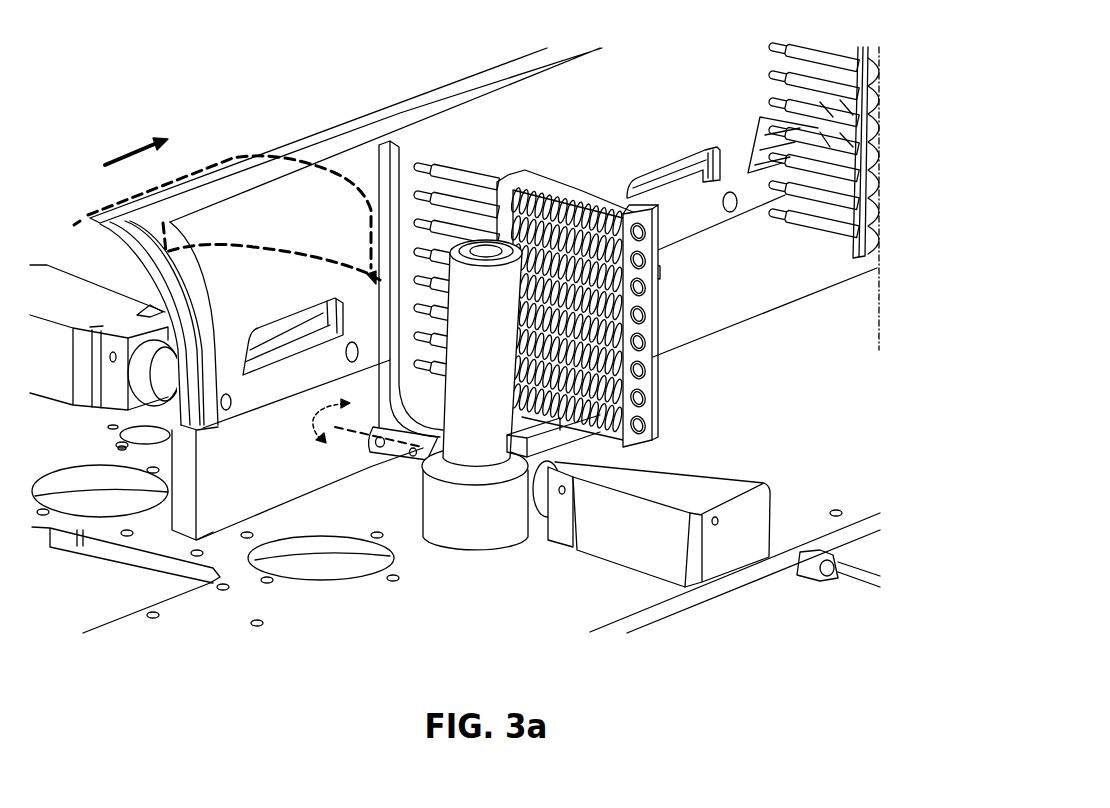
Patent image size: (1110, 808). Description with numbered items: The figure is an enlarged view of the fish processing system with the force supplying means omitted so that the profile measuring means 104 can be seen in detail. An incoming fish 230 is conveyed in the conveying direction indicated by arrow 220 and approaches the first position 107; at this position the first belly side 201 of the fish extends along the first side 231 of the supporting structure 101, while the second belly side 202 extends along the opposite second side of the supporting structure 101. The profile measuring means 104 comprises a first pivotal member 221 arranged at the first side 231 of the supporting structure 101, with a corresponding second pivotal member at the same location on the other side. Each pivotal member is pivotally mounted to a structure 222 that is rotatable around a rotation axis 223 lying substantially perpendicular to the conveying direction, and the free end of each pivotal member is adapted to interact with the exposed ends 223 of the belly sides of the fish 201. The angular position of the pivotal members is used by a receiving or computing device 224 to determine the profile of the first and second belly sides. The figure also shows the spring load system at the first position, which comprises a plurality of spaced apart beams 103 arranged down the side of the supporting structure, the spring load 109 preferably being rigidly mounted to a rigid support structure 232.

The supporting structure 101 is at (502, 118).
The spaced apart beams 103 is at (460, 173).
The profile measuring means 104 is at (353, 140).
The first position 107 is at (345, 472).
The spring load 109 is at (577, 217).
The first belly side 201 is at (200, 262).
The second belly side 202 is at (66, 219).
The conveying direction arrow 220 is at (133, 148).
The first pivotal member 221 is at (398, 164).
The rotatable structure 222 is at (388, 453).
The rotation axis 223 is at (257, 250).
The computing device 224 is at (700, 500).
The fish 230 is at (208, 170).
The first side of the supporting structure 231 is at (256, 319).
The rigid support structure 232 is at (653, 303).